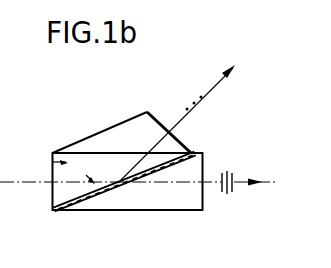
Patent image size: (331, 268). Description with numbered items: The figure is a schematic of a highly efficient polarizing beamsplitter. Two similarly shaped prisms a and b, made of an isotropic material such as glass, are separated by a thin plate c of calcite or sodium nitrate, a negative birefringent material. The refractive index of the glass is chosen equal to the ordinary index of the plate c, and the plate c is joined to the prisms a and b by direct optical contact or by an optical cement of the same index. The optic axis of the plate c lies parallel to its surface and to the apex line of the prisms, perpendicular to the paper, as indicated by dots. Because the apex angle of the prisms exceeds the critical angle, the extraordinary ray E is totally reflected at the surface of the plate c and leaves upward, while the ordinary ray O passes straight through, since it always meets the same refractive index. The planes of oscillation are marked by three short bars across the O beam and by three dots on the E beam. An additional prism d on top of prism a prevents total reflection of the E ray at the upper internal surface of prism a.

The prism a is at (52, 179).
The prism b is at (158, 199).
The thin plate c is at (58, 212).
The additional prism d is at (122, 129).
The extraordinary ray E is at (176, 124).
The ordinary ray O is at (261, 187).